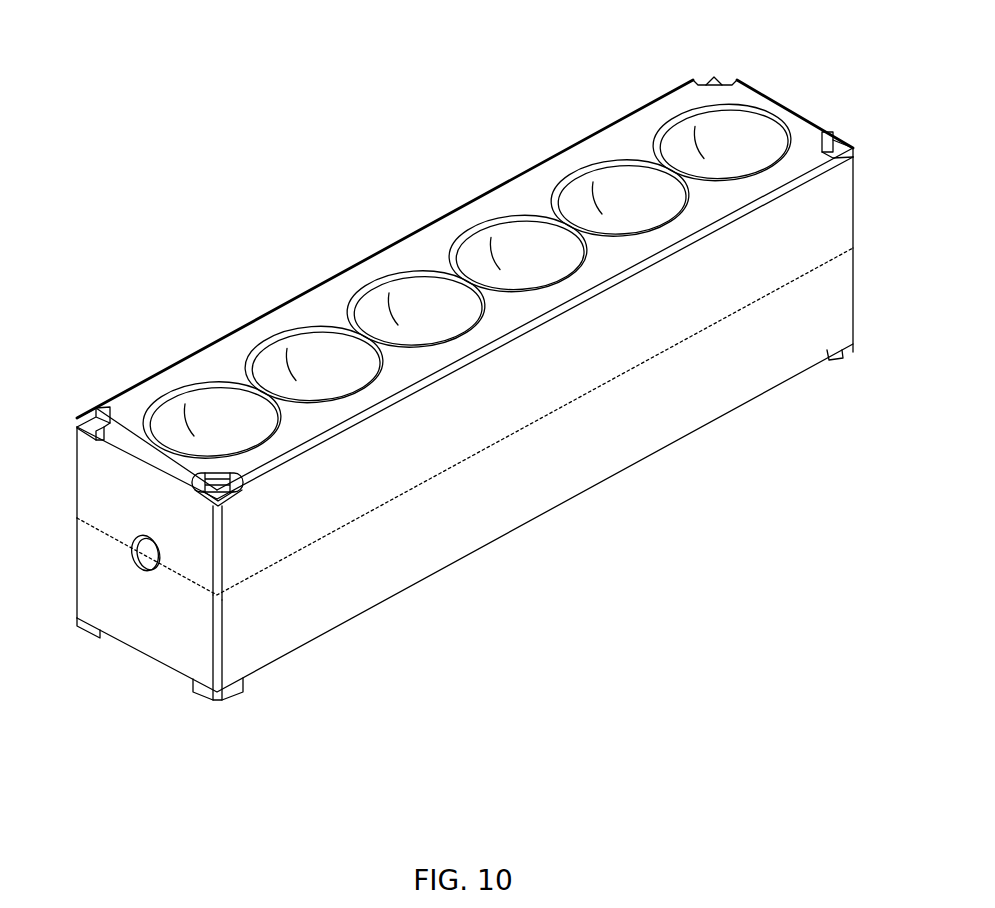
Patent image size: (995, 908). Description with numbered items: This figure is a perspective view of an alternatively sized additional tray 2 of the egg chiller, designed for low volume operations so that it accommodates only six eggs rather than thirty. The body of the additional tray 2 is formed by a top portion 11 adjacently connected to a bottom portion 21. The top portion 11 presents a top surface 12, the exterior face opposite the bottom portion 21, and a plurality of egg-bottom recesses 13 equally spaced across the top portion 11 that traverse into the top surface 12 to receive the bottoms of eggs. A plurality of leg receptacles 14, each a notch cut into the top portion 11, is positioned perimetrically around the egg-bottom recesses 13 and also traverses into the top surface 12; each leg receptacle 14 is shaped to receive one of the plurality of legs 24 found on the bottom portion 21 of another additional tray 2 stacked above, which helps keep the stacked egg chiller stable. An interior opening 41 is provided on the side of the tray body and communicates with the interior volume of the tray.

The additional tray 2 is at (438, 46).
The top portion 11 is at (532, 382).
The top surface 12 is at (313, 298).
The egg-bottom recesses 13 is at (306, 377).
The leg receptacles 14 is at (714, 78).
The bottom portion 21 is at (533, 474).
The legs 24 is at (90, 634).
The interior opening 41 is at (134, 566).